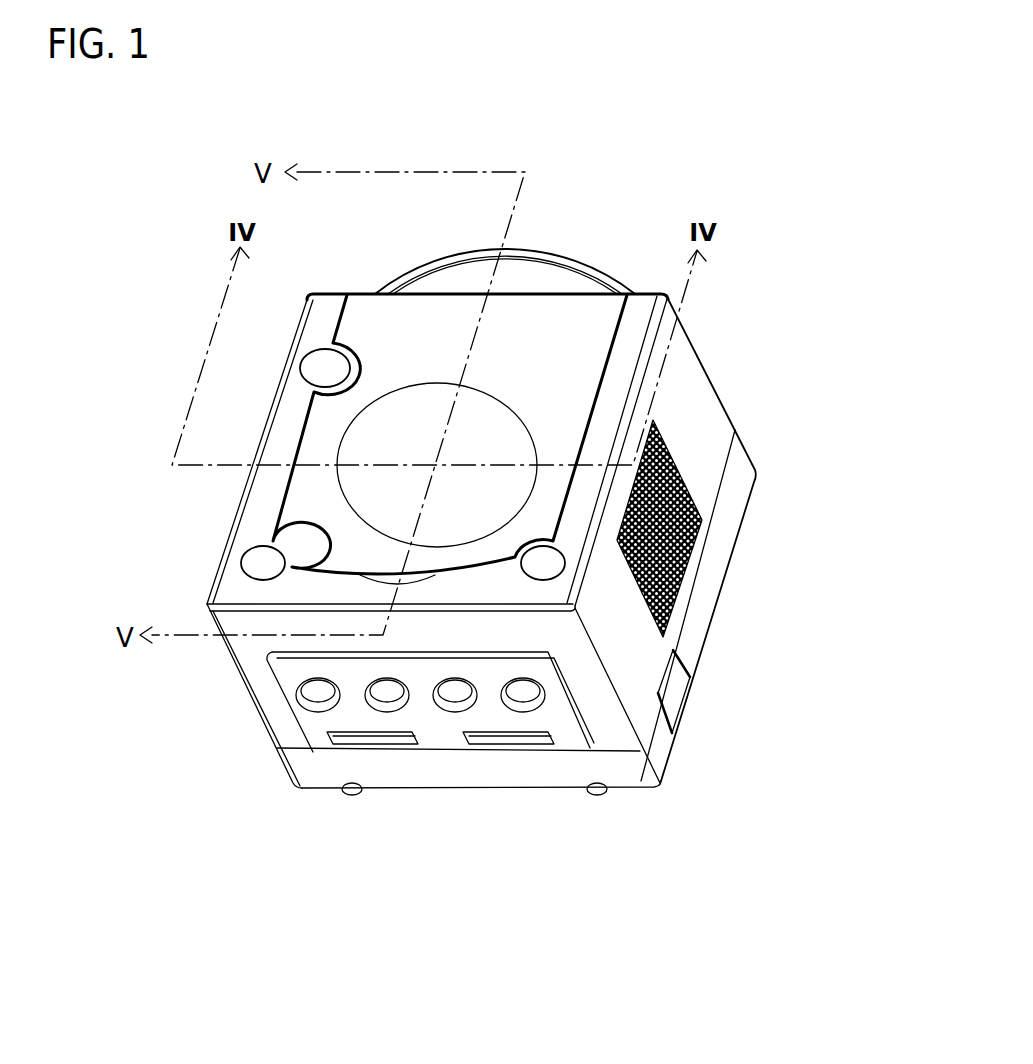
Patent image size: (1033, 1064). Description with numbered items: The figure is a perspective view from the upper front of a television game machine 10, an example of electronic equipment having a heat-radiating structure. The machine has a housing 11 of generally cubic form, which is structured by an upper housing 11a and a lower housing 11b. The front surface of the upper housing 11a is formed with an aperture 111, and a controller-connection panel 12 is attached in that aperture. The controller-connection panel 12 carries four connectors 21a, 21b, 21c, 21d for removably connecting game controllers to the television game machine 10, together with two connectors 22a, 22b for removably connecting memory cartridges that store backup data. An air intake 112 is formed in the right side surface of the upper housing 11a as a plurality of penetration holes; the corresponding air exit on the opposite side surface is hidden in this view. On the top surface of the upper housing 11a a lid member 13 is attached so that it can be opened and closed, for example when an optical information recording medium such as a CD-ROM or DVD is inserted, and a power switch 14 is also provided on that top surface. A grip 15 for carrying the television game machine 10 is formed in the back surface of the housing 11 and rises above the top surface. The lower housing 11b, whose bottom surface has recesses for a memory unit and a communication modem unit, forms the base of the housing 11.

The television game machine 10 is at (664, 205).
The housing 11 is at (643, 866).
The upper housing 11a is at (637, 687).
The lower housing 11b is at (637, 795).
The aperture 111 is at (573, 690).
The air intake 112 is at (690, 542).
The controller-connection panel 12 is at (288, 675).
The lid member 13 is at (380, 312).
The power switch 14 is at (323, 368).
The grip 15 is at (548, 250).
The connector 21a is at (316, 700).
The connector 21b is at (384, 700).
The connector 21c is at (455, 700).
The connector 21d is at (523, 700).
The connector 22a is at (392, 748).
The connector 22b is at (492, 758).